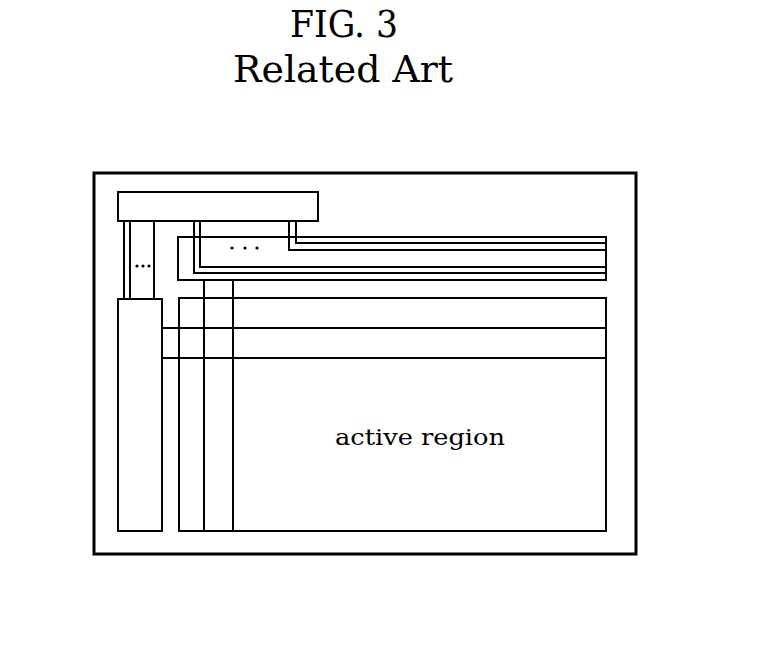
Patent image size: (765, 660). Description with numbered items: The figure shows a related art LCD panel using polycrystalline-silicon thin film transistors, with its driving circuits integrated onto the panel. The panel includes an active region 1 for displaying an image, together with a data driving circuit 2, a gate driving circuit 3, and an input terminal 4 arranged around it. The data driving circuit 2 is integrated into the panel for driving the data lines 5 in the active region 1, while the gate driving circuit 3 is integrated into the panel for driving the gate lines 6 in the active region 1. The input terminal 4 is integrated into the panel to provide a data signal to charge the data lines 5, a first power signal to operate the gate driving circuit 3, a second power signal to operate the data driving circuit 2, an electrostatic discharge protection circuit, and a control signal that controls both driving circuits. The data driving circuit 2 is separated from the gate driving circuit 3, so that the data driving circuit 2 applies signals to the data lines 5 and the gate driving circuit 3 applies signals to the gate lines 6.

The active region 1 is at (544, 532).
The data driving circuit 2 is at (607, 257).
The gate driving circuit 3 is at (137, 407).
The input terminal 4 is at (148, 200).
The data lines 5 is at (235, 501).
The gate lines 6 is at (167, 328).